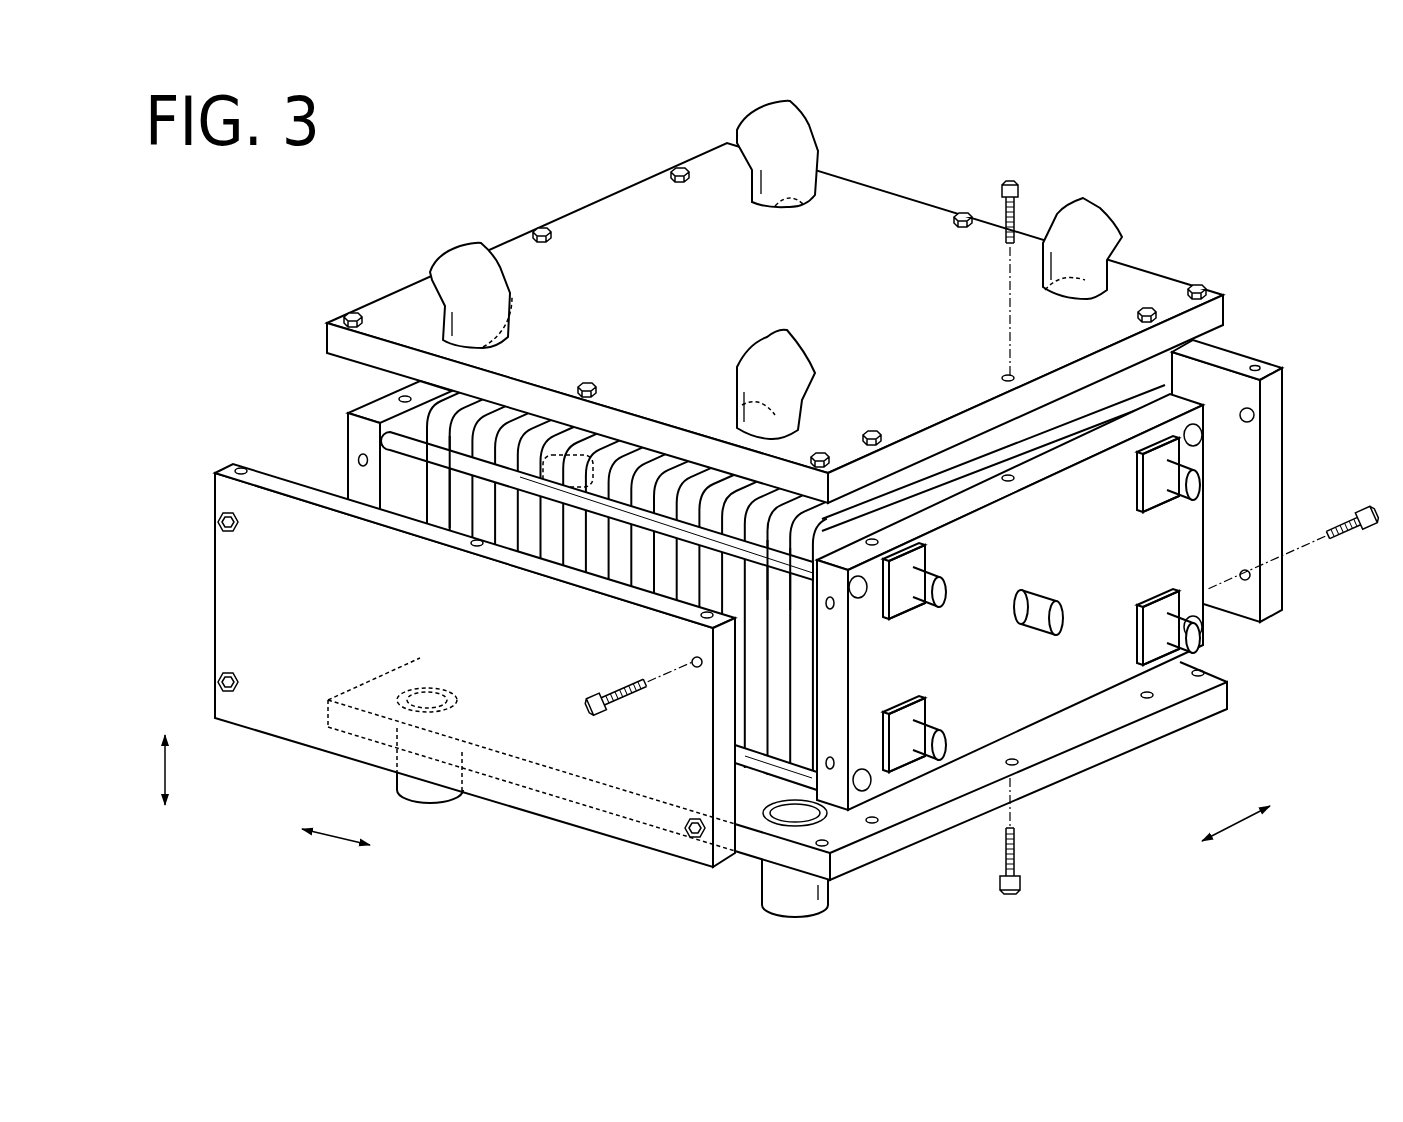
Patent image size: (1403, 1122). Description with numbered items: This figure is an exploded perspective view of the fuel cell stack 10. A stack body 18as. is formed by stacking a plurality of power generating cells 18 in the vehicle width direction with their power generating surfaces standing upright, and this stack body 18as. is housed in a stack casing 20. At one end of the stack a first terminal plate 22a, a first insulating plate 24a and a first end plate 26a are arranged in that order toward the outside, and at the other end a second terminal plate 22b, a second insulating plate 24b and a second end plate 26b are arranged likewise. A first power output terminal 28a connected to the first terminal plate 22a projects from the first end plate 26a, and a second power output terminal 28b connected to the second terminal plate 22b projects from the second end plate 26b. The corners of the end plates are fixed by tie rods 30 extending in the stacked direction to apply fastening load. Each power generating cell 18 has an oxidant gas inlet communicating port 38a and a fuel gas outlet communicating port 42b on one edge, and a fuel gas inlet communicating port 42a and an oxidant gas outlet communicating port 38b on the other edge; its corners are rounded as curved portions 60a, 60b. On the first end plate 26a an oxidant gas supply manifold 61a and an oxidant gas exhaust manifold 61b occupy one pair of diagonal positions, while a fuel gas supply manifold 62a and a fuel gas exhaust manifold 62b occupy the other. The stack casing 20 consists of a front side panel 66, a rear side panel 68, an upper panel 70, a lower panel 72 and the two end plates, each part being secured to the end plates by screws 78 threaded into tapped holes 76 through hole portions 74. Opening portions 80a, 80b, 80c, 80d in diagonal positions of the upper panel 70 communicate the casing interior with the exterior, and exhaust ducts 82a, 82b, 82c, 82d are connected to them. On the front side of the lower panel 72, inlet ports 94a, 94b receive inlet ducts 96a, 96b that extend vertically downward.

The fuel cell stack 10 is at (357, 179).
The power generating cell 18 is at (485, 530).
The stack body 18as is at (546, 632).
The stack casing 20 is at (582, 196).
The first terminal plate 22a is at (783, 682).
The second terminal plate 22b is at (458, 505).
The first insulating plate 24a is at (803, 705).
The second insulating plate 24b is at (432, 480).
The first end plate 26a is at (1085, 688).
The second end plate 26b is at (355, 408).
The first power output terminal 28a is at (1054, 630).
The second power output terminal 28b is at (563, 450).
The tie rod 30 is at (1196, 446).
The oxidant gas inlet communicating port 38a is at (1156, 501).
The oxidant gas outlet communicating port 38b is at (942, 789).
The fuel gas inlet communicating port 42a is at (939, 612).
The fuel gas outlet communicating port 42b is at (1205, 679).
The curved portion 60a is at (607, 470).
The curved portion 60b is at (1083, 425).
The oxidant gas supply manifold 61a is at (1165, 492).
The oxidant gas exhaust manifold 61b is at (935, 758).
The fuel gas supply manifold 62a is at (927, 605).
The fuel gas exhaust manifold 62b is at (1169, 645).
The front side panel 66 is at (258, 720).
The rear side panel 68 is at (1270, 424).
The upper panel 70 is at (882, 202).
The lower panel 72 is at (1098, 752).
The hole portion 74 is at (1005, 376).
The tapped hole 76 is at (1016, 480).
The screw 78 is at (1010, 182).
The opening portion 80a is at (515, 313).
The opening portion 80b is at (1045, 273).
The opening portion 80c is at (743, 397).
The opening portion 80d is at (797, 208).
The exhaust duct 82a is at (455, 260).
The exhaust duct 82b is at (1097, 218).
The exhaust duct 82c is at (788, 352).
The exhaust duct 82d is at (748, 131).
The inlet port 94a is at (393, 702).
The inlet port 94b is at (795, 805).
The inlet duct 96a is at (445, 800).
The inlet duct 96b is at (762, 885).